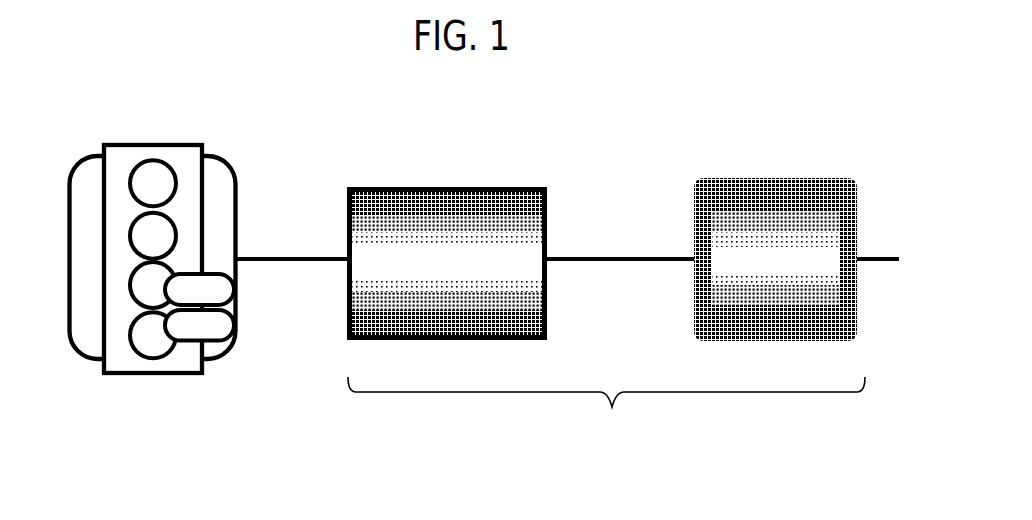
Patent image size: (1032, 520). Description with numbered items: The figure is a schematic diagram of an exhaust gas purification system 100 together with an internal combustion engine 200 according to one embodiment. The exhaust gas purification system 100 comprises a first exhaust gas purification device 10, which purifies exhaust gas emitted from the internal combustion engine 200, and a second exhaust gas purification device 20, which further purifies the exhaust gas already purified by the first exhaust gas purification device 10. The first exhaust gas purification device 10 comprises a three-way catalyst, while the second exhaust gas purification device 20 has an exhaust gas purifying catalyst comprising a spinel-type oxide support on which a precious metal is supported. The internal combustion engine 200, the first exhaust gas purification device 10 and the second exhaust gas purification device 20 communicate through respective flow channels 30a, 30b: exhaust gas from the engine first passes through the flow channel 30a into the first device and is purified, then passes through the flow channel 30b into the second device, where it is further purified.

The internal combustion engine 200 is at (126, 360).
The flow channel 30a is at (289, 257).
The first exhaust gas purification device 10 is at (433, 212).
The flow channel 30b is at (626, 257).
The second exhaust gas purification device 20 is at (773, 217).
The exhaust gas purification system 100 is at (606, 412).